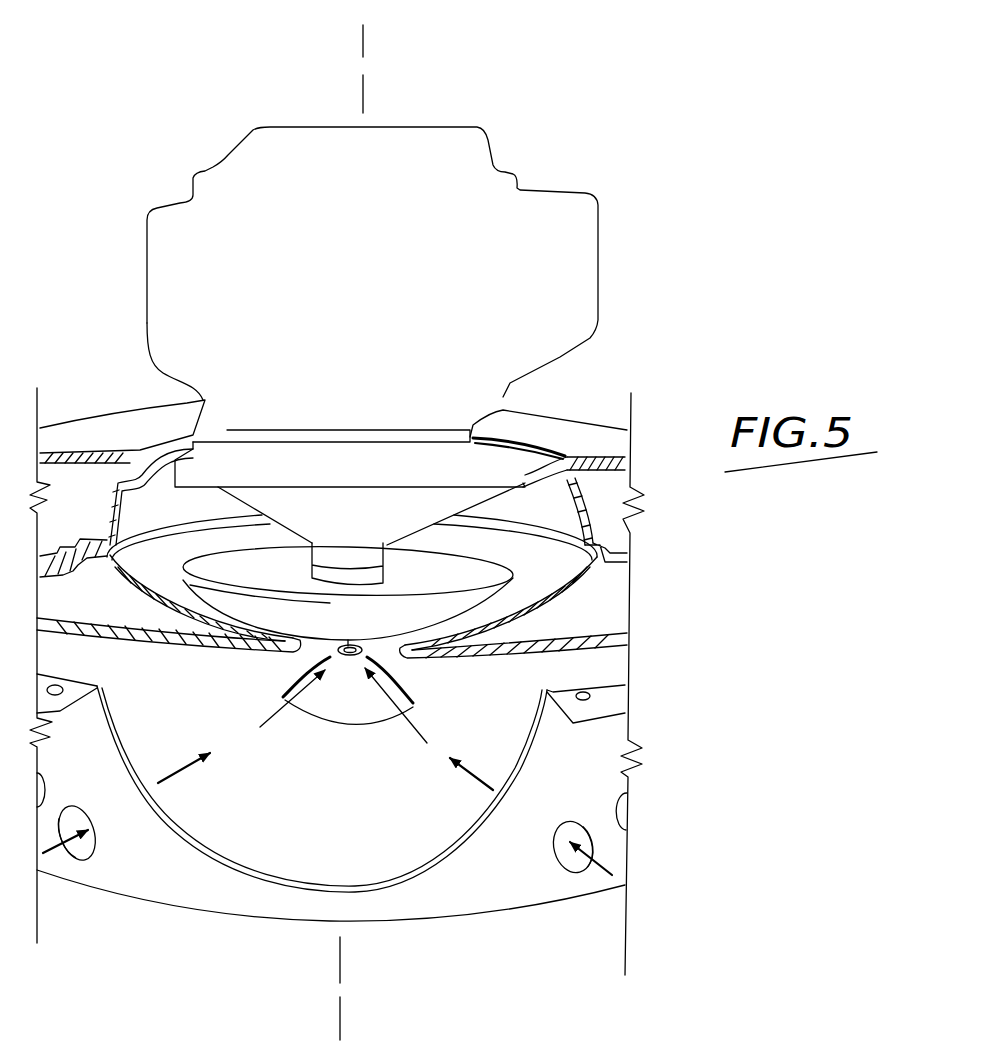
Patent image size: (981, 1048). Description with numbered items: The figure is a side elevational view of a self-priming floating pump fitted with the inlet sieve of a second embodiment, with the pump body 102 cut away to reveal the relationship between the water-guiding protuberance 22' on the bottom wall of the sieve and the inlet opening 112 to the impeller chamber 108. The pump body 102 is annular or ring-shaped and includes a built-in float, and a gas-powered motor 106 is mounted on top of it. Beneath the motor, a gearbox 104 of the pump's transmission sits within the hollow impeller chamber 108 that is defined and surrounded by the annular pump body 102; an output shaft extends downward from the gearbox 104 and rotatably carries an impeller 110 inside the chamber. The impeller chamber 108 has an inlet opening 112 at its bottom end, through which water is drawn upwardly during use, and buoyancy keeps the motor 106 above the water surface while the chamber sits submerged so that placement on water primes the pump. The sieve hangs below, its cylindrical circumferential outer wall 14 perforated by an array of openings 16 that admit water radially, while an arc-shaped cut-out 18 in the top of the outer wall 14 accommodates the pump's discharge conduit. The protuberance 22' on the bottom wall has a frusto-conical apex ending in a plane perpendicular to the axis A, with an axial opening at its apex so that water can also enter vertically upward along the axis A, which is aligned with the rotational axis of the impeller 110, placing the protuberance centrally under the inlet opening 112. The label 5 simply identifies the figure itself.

The piston assembly 5 is at (603, 663).
The cylindrical circumferential outer wall 14 is at (170, 883).
The openings 16 is at (72, 860).
The arc-shaped cut-out 18 is at (243, 867).
The protuberance 22' is at (343, 722).
The pump body 102 is at (563, 437).
The gearbox 104 is at (395, 510).
The gas-powered motor 106 is at (517, 213).
The impeller chamber 108 is at (157, 575).
The impeller 110 is at (260, 567).
The inlet opening 112 is at (322, 642).
The axis A is at (372, 42).